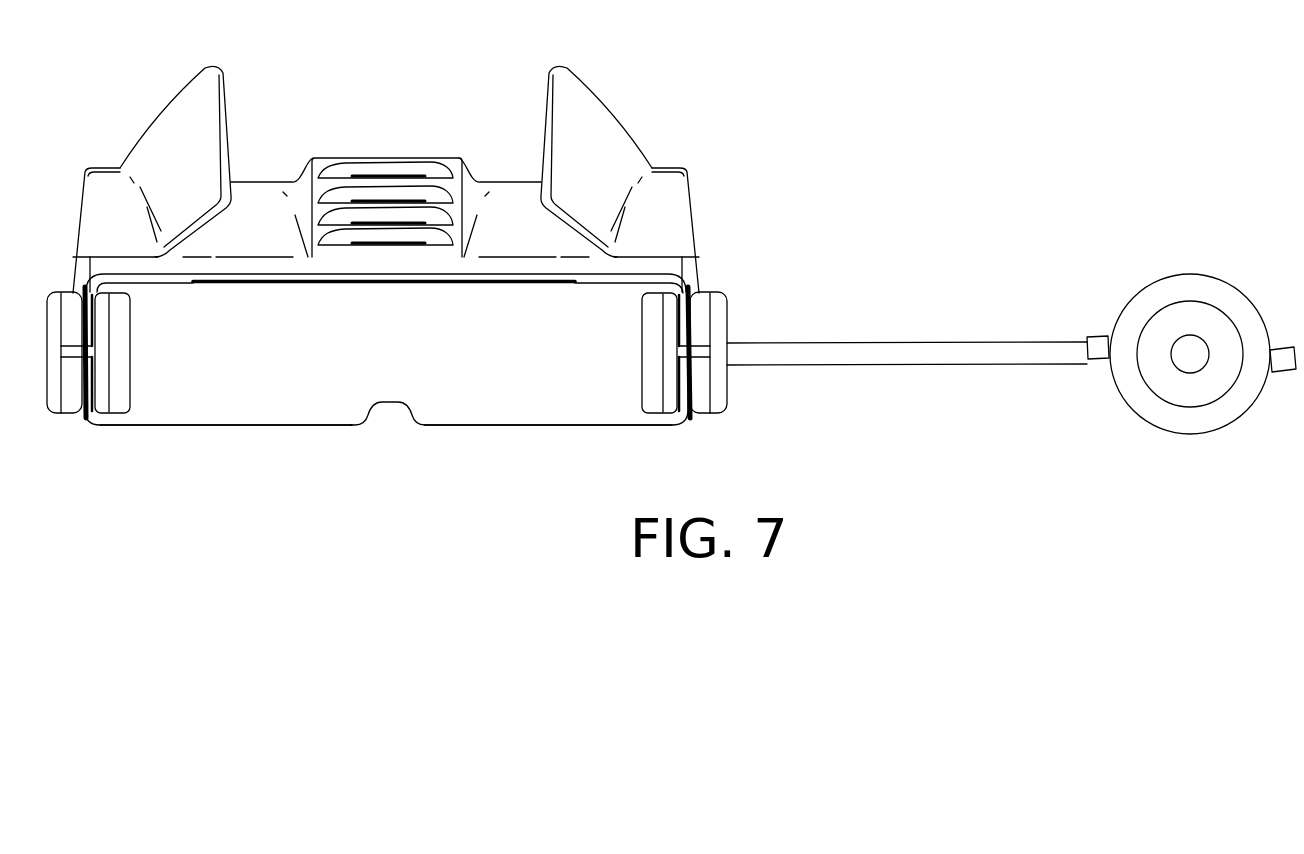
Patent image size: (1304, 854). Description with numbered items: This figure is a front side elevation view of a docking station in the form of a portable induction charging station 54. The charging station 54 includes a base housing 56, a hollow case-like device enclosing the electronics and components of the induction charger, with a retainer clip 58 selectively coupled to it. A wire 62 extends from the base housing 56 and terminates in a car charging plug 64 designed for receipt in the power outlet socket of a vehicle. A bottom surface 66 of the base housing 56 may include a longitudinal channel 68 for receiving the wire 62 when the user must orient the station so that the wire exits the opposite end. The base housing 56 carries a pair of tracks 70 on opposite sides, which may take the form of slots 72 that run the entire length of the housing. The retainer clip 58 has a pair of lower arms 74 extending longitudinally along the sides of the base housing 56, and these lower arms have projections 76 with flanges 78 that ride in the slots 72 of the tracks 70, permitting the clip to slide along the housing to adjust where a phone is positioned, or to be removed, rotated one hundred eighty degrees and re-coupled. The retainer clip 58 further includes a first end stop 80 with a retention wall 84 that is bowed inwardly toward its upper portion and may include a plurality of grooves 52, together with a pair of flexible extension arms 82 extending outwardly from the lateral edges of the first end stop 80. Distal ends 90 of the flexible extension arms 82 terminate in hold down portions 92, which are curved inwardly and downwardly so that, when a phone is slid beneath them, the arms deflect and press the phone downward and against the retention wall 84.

The grooves 52 is at (375, 170).
The portable induction charging station 54 is at (653, 261).
The base housing 56 is at (593, 433).
The retainer clip 58 is at (705, 207).
The wire 62 is at (905, 343).
The car charging plug 64 is at (1227, 428).
The bottom surface 66 is at (223, 428).
The longitudinal channel 68 is at (380, 406).
The tracks 70 is at (80, 338).
The slots 72 is at (123, 347).
The lower arms 74 is at (720, 390).
The projections 76 is at (72, 360).
The flanges 78 is at (103, 388).
The first end stop 80 is at (508, 176).
The flexible extension arms 82 is at (88, 190).
The retention wall 84 is at (318, 188).
The distal ends 90 is at (229, 110).
The hold down portions 92 is at (180, 136).